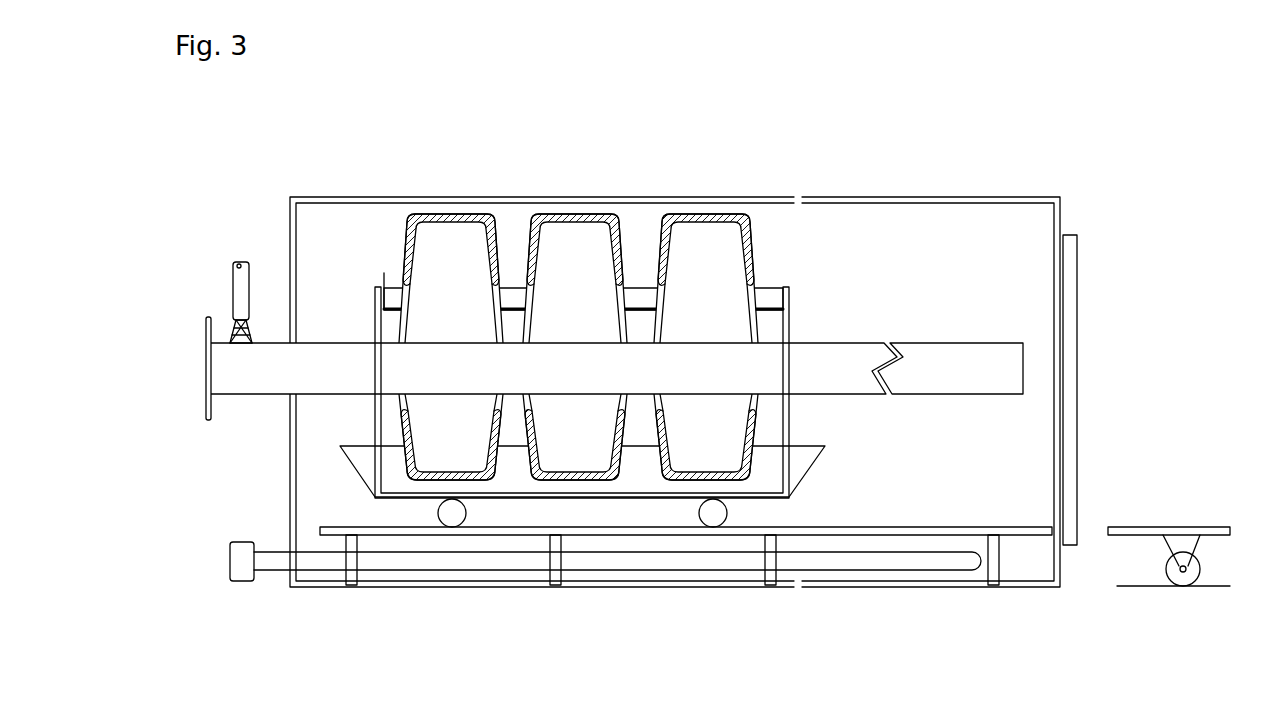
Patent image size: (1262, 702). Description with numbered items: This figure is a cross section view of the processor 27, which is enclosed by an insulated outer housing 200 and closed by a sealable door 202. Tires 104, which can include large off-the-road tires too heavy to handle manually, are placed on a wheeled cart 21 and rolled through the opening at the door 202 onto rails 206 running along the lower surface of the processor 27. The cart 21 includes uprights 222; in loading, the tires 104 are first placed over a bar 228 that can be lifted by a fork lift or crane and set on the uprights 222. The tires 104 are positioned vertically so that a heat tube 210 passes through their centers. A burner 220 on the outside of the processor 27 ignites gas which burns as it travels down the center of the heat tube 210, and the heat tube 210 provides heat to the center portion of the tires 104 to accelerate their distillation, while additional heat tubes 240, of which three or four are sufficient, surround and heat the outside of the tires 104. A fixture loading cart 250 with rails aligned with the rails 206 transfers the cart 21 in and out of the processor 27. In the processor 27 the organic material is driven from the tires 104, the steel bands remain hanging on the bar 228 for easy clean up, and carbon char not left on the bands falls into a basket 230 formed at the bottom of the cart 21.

The processor 27 is at (1100, 62).
The wheeled cart 21 is at (893, 257).
The tires 104 is at (570, 215).
The insulated outer housing 200 is at (1030, 198).
The sealable door 202 is at (1072, 388).
The rails 206 is at (835, 527).
The heat tube 210 is at (826, 360).
The burner 220 is at (235, 320).
The uprights 222 is at (376, 333).
The bar 228 is at (775, 286).
The basket 230 is at (810, 468).
The heat tubes 240 is at (283, 560).
The fixture loading cart 250 is at (1152, 528).